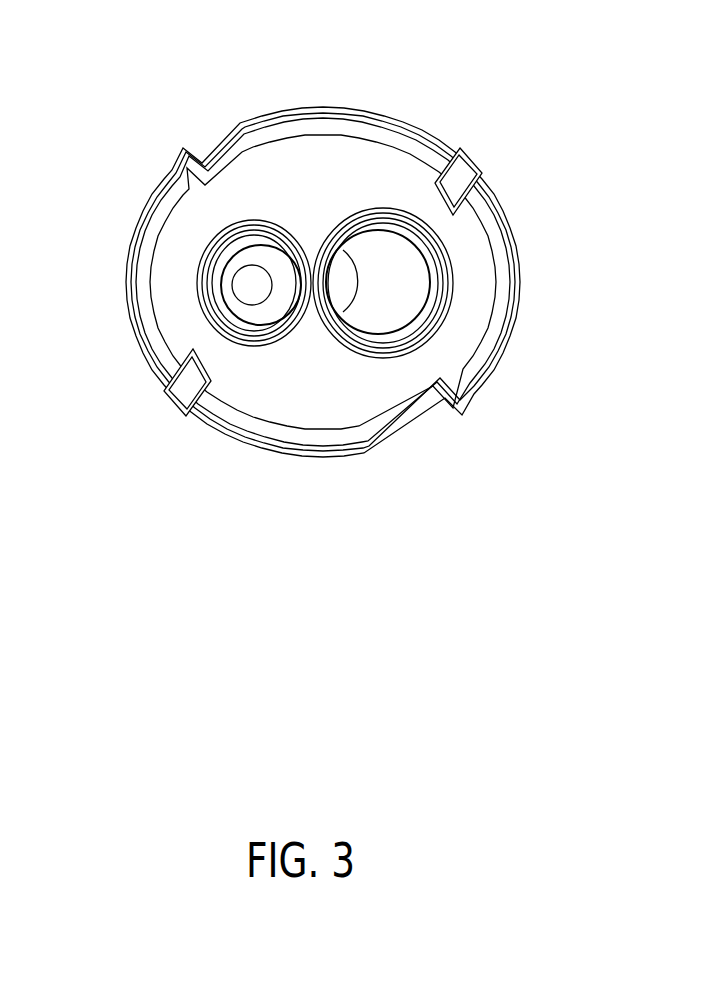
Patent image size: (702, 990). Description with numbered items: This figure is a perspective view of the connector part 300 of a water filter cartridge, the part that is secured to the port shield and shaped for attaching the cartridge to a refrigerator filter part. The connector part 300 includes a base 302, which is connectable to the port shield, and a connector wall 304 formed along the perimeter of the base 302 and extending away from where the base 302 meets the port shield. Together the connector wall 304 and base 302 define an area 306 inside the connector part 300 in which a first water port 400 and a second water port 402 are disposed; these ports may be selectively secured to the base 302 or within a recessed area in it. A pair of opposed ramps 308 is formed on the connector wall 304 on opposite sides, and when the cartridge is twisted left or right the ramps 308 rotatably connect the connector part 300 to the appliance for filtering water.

The connector part 300 is at (309, 281).
The base 302 is at (338, 399).
The connector wall 304 is at (400, 437).
The area 306 is at (168, 243).
The ramps 308 is at (468, 176).
The first water port 400 is at (397, 252).
The second water port 402 is at (272, 258).